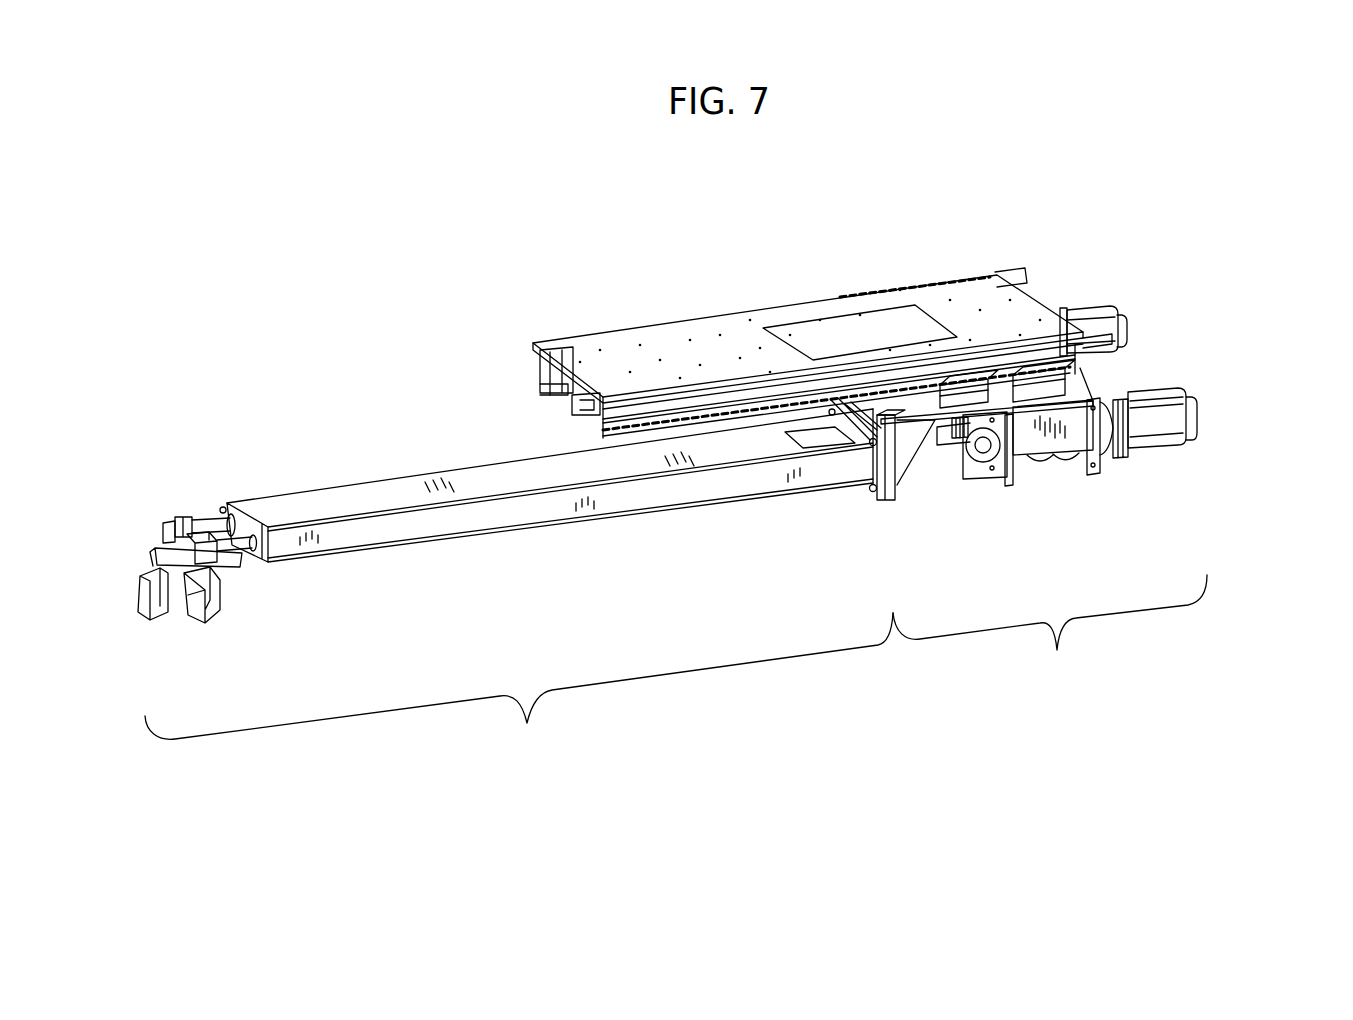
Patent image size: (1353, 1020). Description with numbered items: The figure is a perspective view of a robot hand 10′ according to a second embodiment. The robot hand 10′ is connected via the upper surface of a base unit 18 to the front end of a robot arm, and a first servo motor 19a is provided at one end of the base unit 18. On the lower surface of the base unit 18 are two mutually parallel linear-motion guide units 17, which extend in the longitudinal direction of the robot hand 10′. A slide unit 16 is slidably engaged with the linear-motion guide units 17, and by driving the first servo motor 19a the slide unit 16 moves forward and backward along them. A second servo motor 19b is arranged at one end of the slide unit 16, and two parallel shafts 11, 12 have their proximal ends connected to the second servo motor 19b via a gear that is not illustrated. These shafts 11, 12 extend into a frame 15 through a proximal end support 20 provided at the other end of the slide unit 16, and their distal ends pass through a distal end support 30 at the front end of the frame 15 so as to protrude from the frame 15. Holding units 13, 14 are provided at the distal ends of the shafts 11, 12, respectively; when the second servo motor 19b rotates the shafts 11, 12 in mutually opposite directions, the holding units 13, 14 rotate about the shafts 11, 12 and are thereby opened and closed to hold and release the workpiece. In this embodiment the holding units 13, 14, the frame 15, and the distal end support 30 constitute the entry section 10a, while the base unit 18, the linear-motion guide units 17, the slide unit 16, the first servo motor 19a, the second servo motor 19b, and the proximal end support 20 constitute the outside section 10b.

The robot hand 10′ is at (1065, 234).
The entry section 10a is at (519, 687).
The outside section 10b is at (1050, 630).
The shaft 11 is at (245, 530).
The shaft 12 is at (211, 520).
The holding unit 13 is at (203, 605).
The holding unit 14 is at (152, 615).
The frame 15 is at (354, 488).
The slide unit 16 is at (890, 408).
The linear-motion guide units 17 is at (603, 402).
The base unit 18 is at (966, 303).
The first servo motor 19a is at (1115, 316).
The second servo motor 19b is at (1165, 403).
The proximal end support 20 is at (890, 511).
The distal end support 30 is at (267, 578).